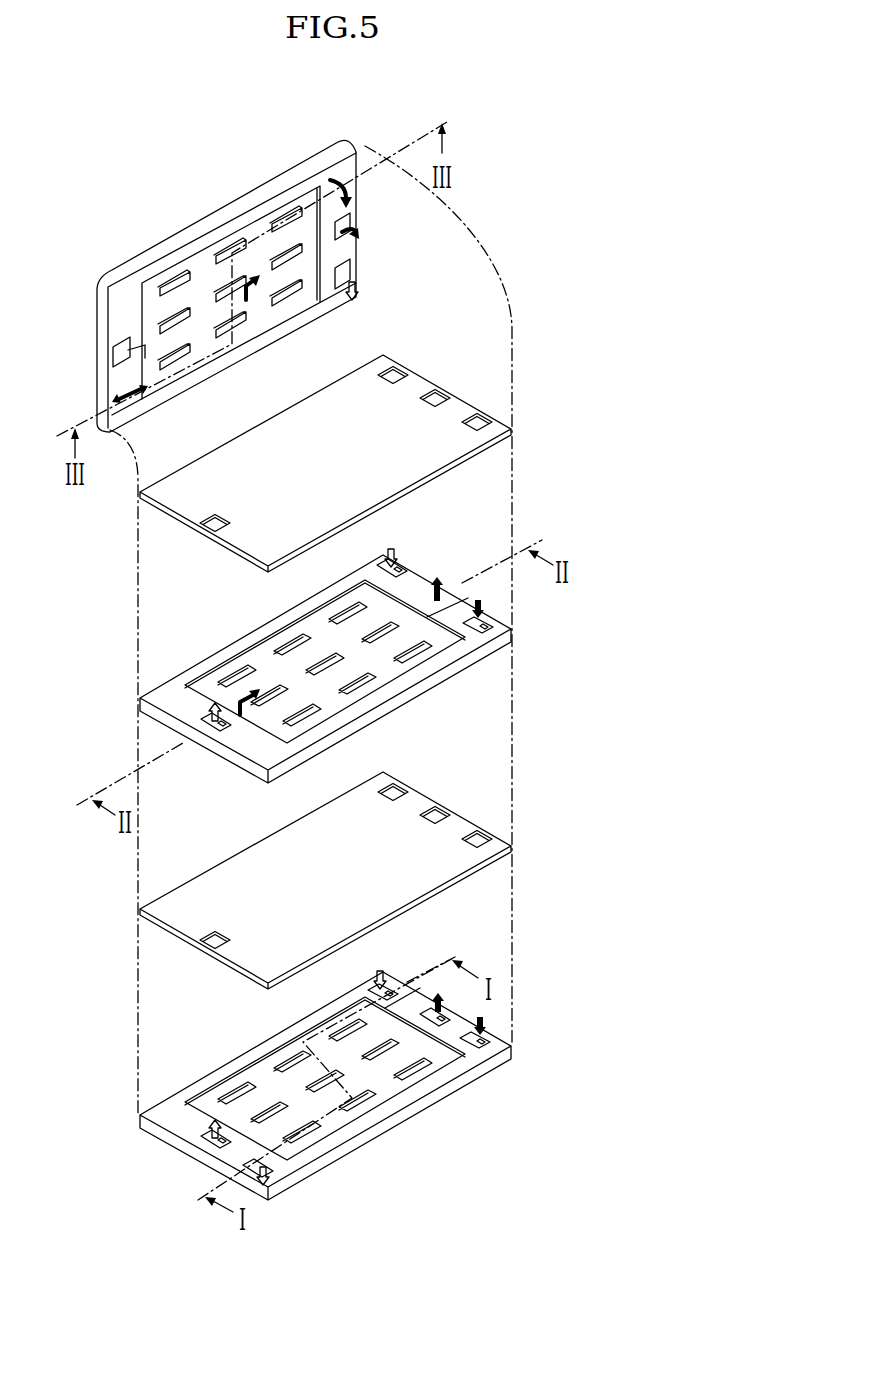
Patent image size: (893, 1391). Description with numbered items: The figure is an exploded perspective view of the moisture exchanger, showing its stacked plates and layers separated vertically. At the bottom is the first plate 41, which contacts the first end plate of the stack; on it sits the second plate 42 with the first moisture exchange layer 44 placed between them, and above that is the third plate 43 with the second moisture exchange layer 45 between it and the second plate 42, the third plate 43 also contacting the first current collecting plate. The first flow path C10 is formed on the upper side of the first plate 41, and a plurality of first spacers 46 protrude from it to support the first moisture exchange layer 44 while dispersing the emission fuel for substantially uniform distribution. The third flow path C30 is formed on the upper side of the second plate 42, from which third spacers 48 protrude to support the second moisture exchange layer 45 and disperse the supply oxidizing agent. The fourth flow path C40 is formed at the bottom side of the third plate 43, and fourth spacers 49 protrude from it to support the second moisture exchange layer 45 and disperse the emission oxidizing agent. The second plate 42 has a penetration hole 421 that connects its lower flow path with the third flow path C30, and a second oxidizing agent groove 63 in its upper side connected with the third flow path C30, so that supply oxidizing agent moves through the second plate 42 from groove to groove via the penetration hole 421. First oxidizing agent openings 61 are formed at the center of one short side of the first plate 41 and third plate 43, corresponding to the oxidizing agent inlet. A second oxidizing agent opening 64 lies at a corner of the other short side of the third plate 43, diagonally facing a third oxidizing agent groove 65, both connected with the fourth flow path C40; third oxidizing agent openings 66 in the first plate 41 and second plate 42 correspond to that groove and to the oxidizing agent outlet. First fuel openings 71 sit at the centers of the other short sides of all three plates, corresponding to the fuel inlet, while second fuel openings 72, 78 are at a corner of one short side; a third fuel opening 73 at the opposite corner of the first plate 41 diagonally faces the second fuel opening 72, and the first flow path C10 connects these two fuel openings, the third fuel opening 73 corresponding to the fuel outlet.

The first plate 41 is at (285, 1086).
The second plate 42 is at (295, 669).
The third plate 43 is at (115, 312).
The first moisture exchange layer 44 is at (325, 868).
The second moisture exchange layer 45 is at (325, 449).
The first spacers 46 is at (353, 1081).
The third spacers 48 is at (312, 656).
The fourth spacers 49 is at (180, 280).
The penetration hole 421 is at (219, 755).
The first oxidizing agent openings 61 is at (495, 1008).
The second oxidizing agent groove 63 is at (513, 620).
The second oxidizing agent opening 64 is at (115, 400).
The third oxidizing agent groove 65 is at (338, 183).
The third oxidizing agent openings 66 is at (527, 637).
The first fuel openings 71 is at (160, 722).
The second fuel opening 72 is at (411, 548).
The third fuel opening 73 is at (206, 1181).
The second fuel opening 78 is at (408, 957).
The first flow path C10 is at (321, 1078).
The third flow path C30 is at (330, 661).
The fourth flow path C40 is at (313, 263).